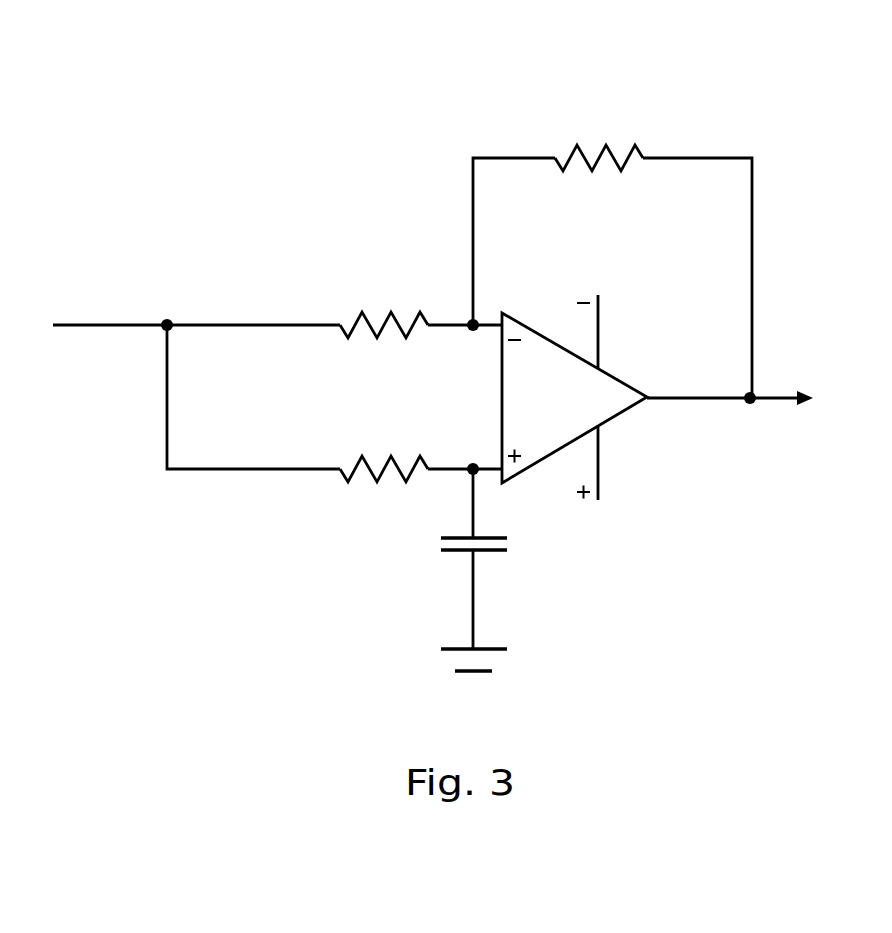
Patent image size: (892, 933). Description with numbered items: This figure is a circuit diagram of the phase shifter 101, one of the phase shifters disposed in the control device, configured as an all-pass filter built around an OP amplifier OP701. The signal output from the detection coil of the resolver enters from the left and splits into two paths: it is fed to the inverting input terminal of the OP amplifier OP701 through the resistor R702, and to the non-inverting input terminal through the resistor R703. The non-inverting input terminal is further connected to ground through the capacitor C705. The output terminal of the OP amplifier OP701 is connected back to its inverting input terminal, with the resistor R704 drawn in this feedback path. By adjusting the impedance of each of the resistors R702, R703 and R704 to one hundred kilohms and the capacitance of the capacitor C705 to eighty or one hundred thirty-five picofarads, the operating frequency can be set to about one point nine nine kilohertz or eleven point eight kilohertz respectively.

The phase shifter 101 is at (421, 69).
The resistor R702 is at (411, 297).
The resistor R703 is at (411, 441).
The resistor R704 is at (623, 129).
The OP amplifier OP701 is at (543, 308).
The capacitor C705 is at (493, 551).